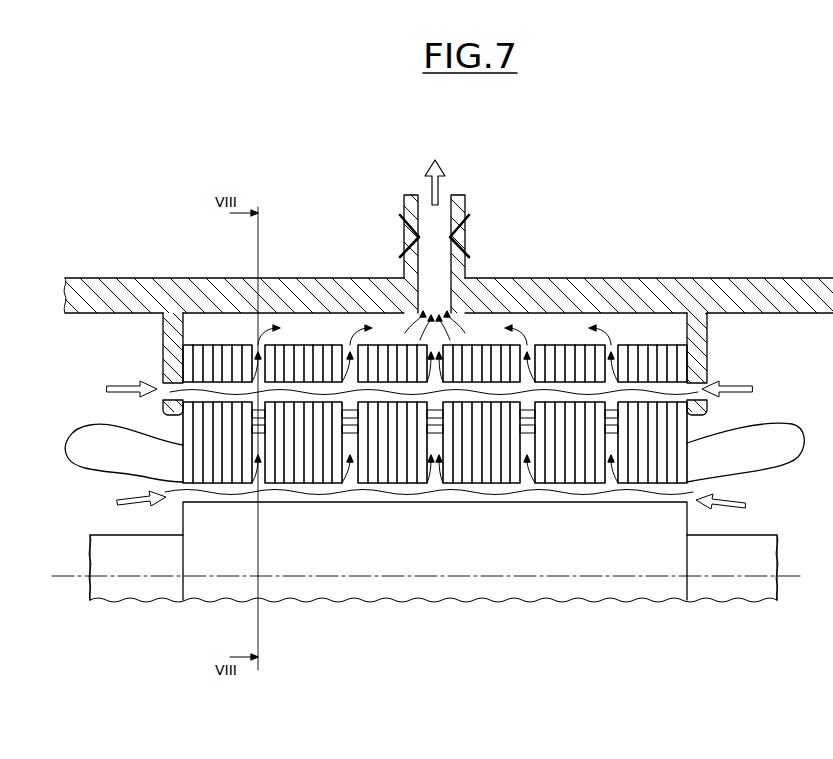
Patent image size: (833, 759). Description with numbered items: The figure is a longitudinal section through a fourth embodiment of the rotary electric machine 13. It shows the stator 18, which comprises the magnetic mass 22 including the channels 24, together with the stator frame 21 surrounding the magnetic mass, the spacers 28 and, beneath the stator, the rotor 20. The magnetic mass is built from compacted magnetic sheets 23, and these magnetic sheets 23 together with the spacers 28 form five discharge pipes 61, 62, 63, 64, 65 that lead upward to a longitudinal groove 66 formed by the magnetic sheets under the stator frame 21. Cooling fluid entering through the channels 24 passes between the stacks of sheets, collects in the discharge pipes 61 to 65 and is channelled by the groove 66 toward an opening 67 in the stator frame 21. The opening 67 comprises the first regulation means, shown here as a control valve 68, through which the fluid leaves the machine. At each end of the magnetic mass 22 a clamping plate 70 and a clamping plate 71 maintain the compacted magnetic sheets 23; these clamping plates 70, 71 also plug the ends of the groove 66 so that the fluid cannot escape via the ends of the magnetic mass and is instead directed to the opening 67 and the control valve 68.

The rotary electric machine 13 is at (633, 177).
The stator 18 is at (680, 237).
The rotor 20 is at (603, 557).
The stator frame 21 is at (793, 278).
The magnetic mass 22 is at (708, 328).
The magnetic sheets 23 is at (165, 470).
The channels 24 is at (170, 392).
The spacers 28 is at (240, 432).
The first discharge pipe 61 is at (265, 423).
The second discharge pipe 62 is at (358, 423).
The third discharge pipe 63 is at (443, 423).
The fourth discharge pipe 64 is at (535, 423).
The fifth discharge pipe 65 is at (618, 423).
The longitudinal groove 66 is at (632, 330).
The opening 67 is at (430, 268).
The control valve 68 is at (453, 243).
The clamping plate 70 is at (163, 352).
The clamping plate 71 is at (708, 360).